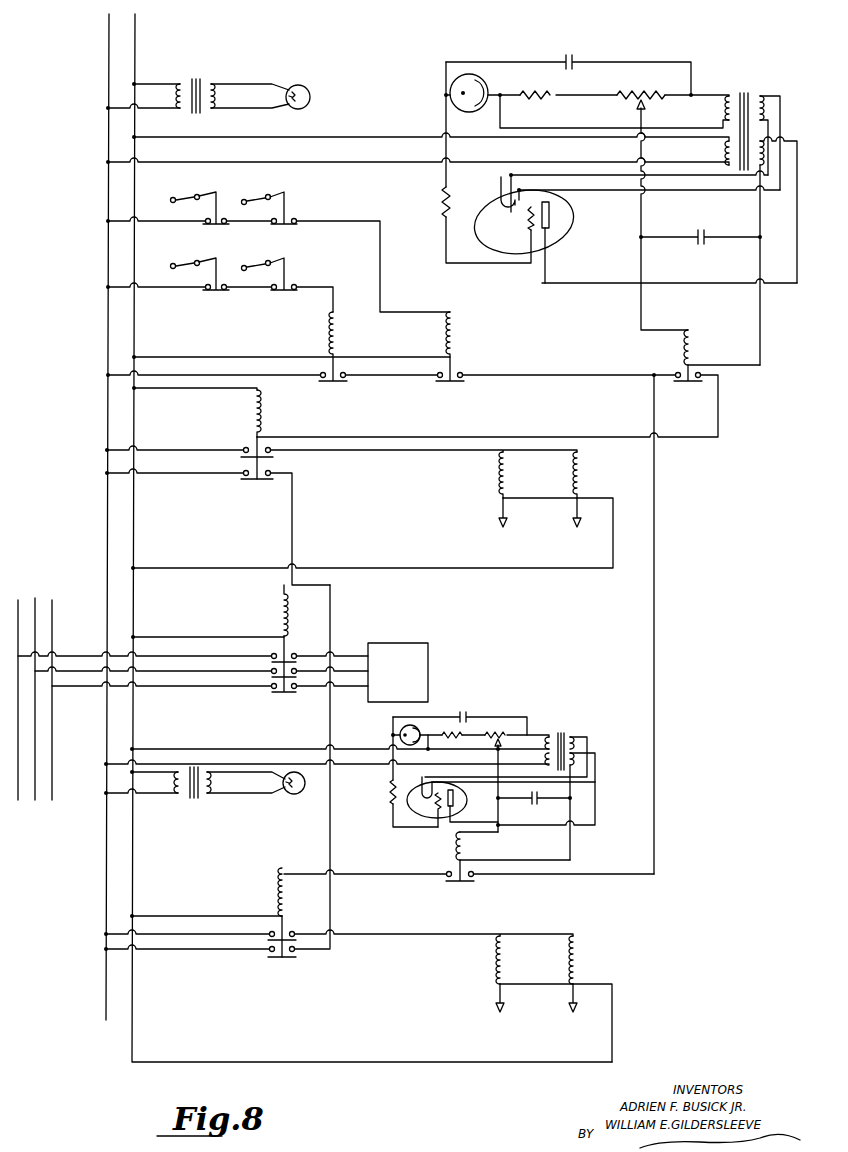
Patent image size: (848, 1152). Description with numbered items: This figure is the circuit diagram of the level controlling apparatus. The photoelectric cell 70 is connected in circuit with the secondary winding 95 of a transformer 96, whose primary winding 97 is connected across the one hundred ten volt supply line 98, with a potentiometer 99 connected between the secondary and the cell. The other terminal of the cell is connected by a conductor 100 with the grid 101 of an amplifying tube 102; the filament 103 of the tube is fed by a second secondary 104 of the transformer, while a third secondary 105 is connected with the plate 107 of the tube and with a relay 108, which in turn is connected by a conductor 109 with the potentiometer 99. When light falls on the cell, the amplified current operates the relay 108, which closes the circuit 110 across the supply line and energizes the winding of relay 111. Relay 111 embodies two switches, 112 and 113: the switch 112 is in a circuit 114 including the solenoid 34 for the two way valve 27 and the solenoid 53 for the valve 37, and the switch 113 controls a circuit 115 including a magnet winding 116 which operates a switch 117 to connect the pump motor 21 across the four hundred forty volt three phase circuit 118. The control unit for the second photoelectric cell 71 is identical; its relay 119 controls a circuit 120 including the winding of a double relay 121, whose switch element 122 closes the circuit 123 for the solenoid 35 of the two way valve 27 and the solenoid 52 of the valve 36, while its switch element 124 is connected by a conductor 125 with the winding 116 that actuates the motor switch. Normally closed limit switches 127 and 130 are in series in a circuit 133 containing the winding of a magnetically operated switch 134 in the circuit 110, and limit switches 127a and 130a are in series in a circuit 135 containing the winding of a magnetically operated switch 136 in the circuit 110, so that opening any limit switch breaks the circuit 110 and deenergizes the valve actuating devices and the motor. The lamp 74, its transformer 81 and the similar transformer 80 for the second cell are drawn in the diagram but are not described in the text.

The supply line 98 is at (135, 60).
The transformer 81 is at (210, 78).
The lamp 74 is at (308, 88).
The photoelectric cell 70 is at (470, 74).
The potentiometer 99 is at (643, 93).
The conductor 100 is at (446, 240).
The secondary winding 95 is at (729, 96).
The transformer 96 is at (745, 93).
The second secondary 104 is at (760, 104).
The primary winding 97 is at (726, 152).
The third secondary 105 is at (760, 167).
The amplifying tube 102 is at (572, 228).
The filament 103 is at (503, 192).
The plate 107 is at (551, 210).
The grid 101 is at (528, 228).
The conductor 109 is at (641, 268).
The limit switch 127 is at (217, 198).
The limit switch 127a is at (217, 262).
The limit switch 130 is at (288, 210).
The limit switch 130a is at (288, 280).
The circuit 133 is at (383, 294).
The circuit 135 is at (312, 290).
The magnetically operated switch 136 is at (340, 360).
The magnetically operated switch 134 is at (455, 365).
The relay 108 is at (692, 360).
The circuit 110 is at (562, 378).
The relay 111 is at (265, 420).
The switch 112 is at (244, 448).
The switch 113 is at (244, 476).
The circuit 114 is at (380, 452).
The circuit 115 is at (296, 538).
The conductor 125 is at (330, 792).
The solenoid 34 is at (498, 478).
The solenoid 53 is at (582, 482).
The two way valve 27 is at (500, 530).
The valve 37 is at (577, 530).
The three phase circuit 118 is at (20, 600).
The magnet winding 116 is at (280, 625).
The switch 117 is at (282, 698).
The pump motor 21 is at (418, 662).
The transformer 80 is at (200, 770).
The photoelectric cell 71 is at (418, 728).
The relay 119 is at (470, 852).
The circuit 120 is at (572, 876).
The double relay 121 is at (278, 895).
The switch element 122 is at (296, 932).
The switch element 124 is at (283, 958).
The circuit 123 is at (388, 936).
The solenoid 35 is at (495, 962).
The solenoid 52 is at (580, 960).
The valve 36 is at (572, 1020).